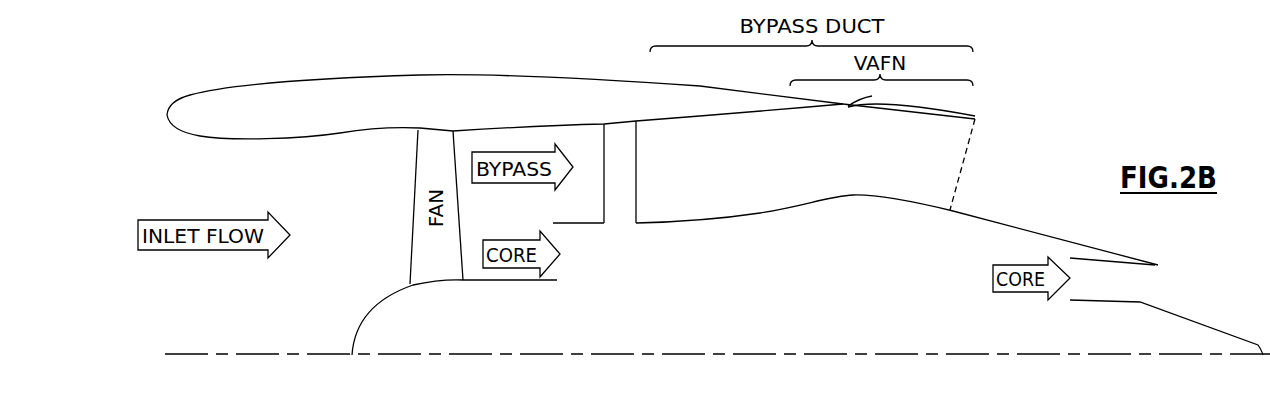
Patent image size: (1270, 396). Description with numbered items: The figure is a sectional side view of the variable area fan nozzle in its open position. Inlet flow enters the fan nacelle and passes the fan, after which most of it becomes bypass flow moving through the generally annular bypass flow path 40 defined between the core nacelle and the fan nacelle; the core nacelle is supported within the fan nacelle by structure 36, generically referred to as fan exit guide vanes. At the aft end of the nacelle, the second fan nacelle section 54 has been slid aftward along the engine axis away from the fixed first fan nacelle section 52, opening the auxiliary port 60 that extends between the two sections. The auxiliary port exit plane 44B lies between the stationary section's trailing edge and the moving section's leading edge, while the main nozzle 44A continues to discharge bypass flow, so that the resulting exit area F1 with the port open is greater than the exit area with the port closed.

The structure 36 is at (637, 177).
The bypass flow path 40 is at (897, 219).
The first fan nacelle section 52 is at (751, 107).
The second fan nacelle section 54 is at (911, 111).
The auxiliary port 60 is at (841, 106).
The main nozzle 44A is at (960, 180).
The auxiliary port exit plane 44B is at (848, 106).
The exit area F1 is at (968, 143).